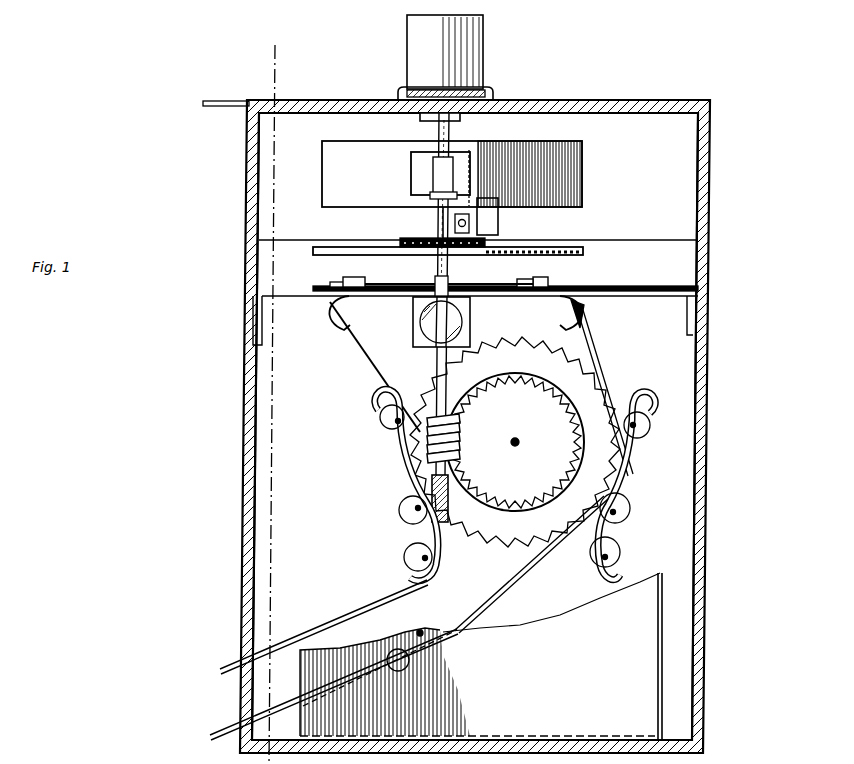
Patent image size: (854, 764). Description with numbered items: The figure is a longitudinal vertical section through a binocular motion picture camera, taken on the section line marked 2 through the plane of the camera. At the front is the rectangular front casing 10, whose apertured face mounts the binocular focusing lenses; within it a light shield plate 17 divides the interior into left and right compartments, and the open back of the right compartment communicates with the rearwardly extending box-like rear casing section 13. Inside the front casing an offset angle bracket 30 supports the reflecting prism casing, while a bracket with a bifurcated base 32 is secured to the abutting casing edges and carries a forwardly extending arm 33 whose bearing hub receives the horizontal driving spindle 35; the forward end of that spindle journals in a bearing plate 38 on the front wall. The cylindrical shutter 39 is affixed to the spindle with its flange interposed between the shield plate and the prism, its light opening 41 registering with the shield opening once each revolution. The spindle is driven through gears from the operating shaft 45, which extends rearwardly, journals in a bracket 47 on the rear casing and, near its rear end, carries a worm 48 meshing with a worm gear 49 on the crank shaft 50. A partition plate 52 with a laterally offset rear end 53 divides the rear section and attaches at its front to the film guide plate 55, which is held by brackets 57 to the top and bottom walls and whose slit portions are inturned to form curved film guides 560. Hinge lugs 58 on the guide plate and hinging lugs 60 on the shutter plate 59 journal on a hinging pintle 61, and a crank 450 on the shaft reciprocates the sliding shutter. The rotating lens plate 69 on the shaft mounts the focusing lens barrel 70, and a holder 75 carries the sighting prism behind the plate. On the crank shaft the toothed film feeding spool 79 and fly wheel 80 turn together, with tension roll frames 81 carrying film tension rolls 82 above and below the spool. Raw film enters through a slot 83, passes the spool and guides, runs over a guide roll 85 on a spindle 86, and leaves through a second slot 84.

The section line 2 is at (262, 52).
The front casing 10 is at (243, 207).
The rear casing section 13 is at (300, 395).
The light shield plate 17 is at (675, 203).
The offset angle bracket 30 is at (454, 226).
The bifurcated base 32 is at (498, 225).
The forwardly extending arm 33 is at (432, 173).
The driving spindle 35 is at (441, 216).
The bearing plate 38 is at (483, 84).
The cylindrical shutter 39 is at (570, 184).
The light opening 41 is at (411, 161).
The operating shaft 45 is at (440, 266).
The bracket 47 is at (448, 500).
The worm 48 is at (515, 442).
The worm gear 49 is at (540, 378).
The crank shaft 50 is at (521, 440).
The partition plate 52 is at (552, 656).
The laterally offset rear end 53 is at (481, 727).
The film guide plate 55 is at (630, 293).
The brackets 57 is at (259, 302).
The hinge lugs 58 is at (352, 277).
The shutter plate 59 is at (334, 283).
The hinging lugs 60 is at (515, 275).
The hinging pintle 61 is at (470, 282).
The rotating lens plate 69 is at (322, 247).
The focusing lens barrel 70 is at (496, 244).
The holder 75 is at (420, 331).
The toothed film feeding spool 79 is at (566, 355).
The fly wheel 80 is at (576, 397).
The tension roll frames 81 is at (400, 455).
The film tension rolls 82 is at (405, 518).
The slot 83 is at (247, 655).
The second slot 84 is at (232, 727).
The guide roll 85 is at (420, 630).
The spindle 86 is at (387, 663).
The crank 450 is at (435, 280).
The film guides 560 is at (348, 325).